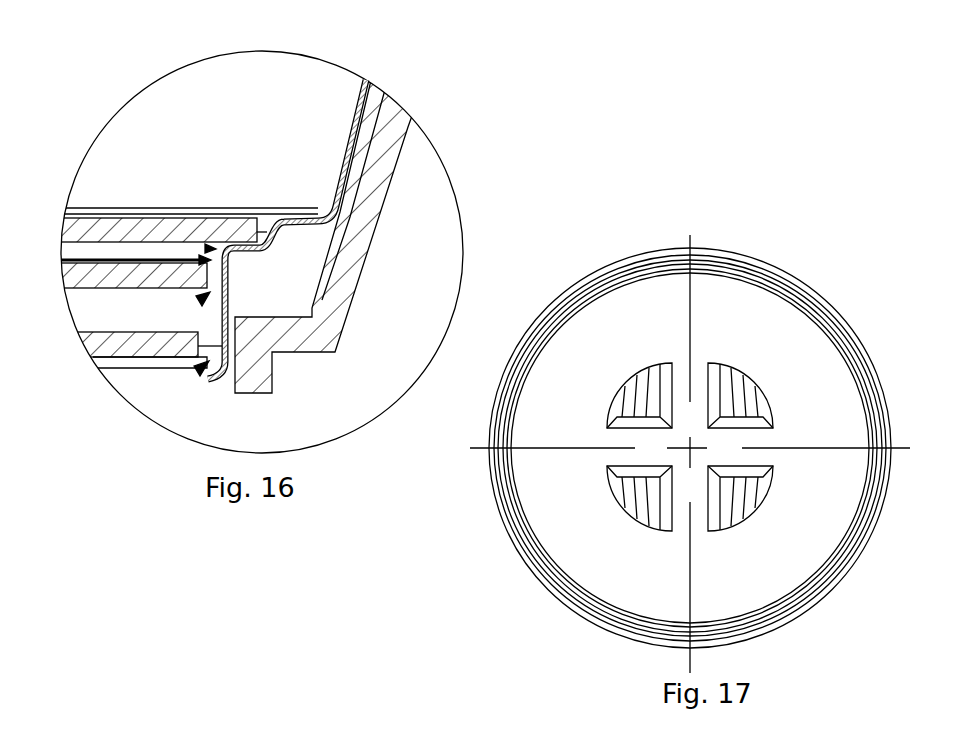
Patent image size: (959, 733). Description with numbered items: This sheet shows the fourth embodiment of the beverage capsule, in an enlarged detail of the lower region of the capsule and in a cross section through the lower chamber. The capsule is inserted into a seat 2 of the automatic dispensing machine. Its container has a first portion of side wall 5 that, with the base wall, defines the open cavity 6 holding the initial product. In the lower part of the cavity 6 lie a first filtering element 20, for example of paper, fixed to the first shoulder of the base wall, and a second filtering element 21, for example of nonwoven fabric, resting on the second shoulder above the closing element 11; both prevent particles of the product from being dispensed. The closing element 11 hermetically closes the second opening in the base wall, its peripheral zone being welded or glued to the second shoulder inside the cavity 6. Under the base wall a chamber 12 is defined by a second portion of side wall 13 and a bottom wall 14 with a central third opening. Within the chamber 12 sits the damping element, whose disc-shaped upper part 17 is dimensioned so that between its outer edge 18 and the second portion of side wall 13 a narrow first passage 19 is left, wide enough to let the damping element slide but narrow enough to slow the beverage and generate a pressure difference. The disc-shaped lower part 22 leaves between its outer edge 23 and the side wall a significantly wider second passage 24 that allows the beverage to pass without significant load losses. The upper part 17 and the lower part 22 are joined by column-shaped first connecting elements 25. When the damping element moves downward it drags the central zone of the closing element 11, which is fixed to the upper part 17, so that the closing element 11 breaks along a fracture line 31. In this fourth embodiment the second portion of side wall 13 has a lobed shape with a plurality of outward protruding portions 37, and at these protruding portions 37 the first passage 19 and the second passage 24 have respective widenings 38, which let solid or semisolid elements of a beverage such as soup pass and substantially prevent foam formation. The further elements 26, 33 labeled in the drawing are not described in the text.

In FIG. 16, the seat 2 is at (362, 298).
In FIG. 16, the first portion of side wall 5 is at (360, 128).
In FIG. 16, the cavity 6 is at (260, 98).
In FIG. 16, the closing element 11 is at (150, 233).
In FIG. 16, the chamber 12 is at (153, 303).
In FIG. 17, the second portion of side wall 13 is at (786, 258).
In FIG. 16, the bottom wall 14 is at (235, 422).
In FIG. 16, the upper part 17 is at (103, 273).
In FIG. 16, the outer edge 18 is at (232, 295).
In FIG. 16, the first passage 19 is at (206, 295).
In FIG. 16, the first filtering element 20 is at (282, 226).
In FIG. 16, the second filtering element 21 is at (182, 228).
In FIG. 16, the lower part 22 is at (105, 345).
In FIG. 17, the lower part 22 is at (545, 490).
In FIG. 16, the outer edge 23 is at (210, 380).
In FIG. 16, the second passage 24 is at (205, 364).
In FIG. 17, the first connecting elements 25 is at (647, 402).
In FIG. 16, the upper element 26 is at (359, 7).
In FIG. 16, the fracture line 31 is at (207, 247).
In FIG. 16, the upper element 33 is at (496, 9).
In FIG. 16, the protruding portions 37 is at (232, 274).
In FIG. 17, the protruding portions 37 is at (696, 250).
In FIG. 17, the widenings 38 is at (684, 253).